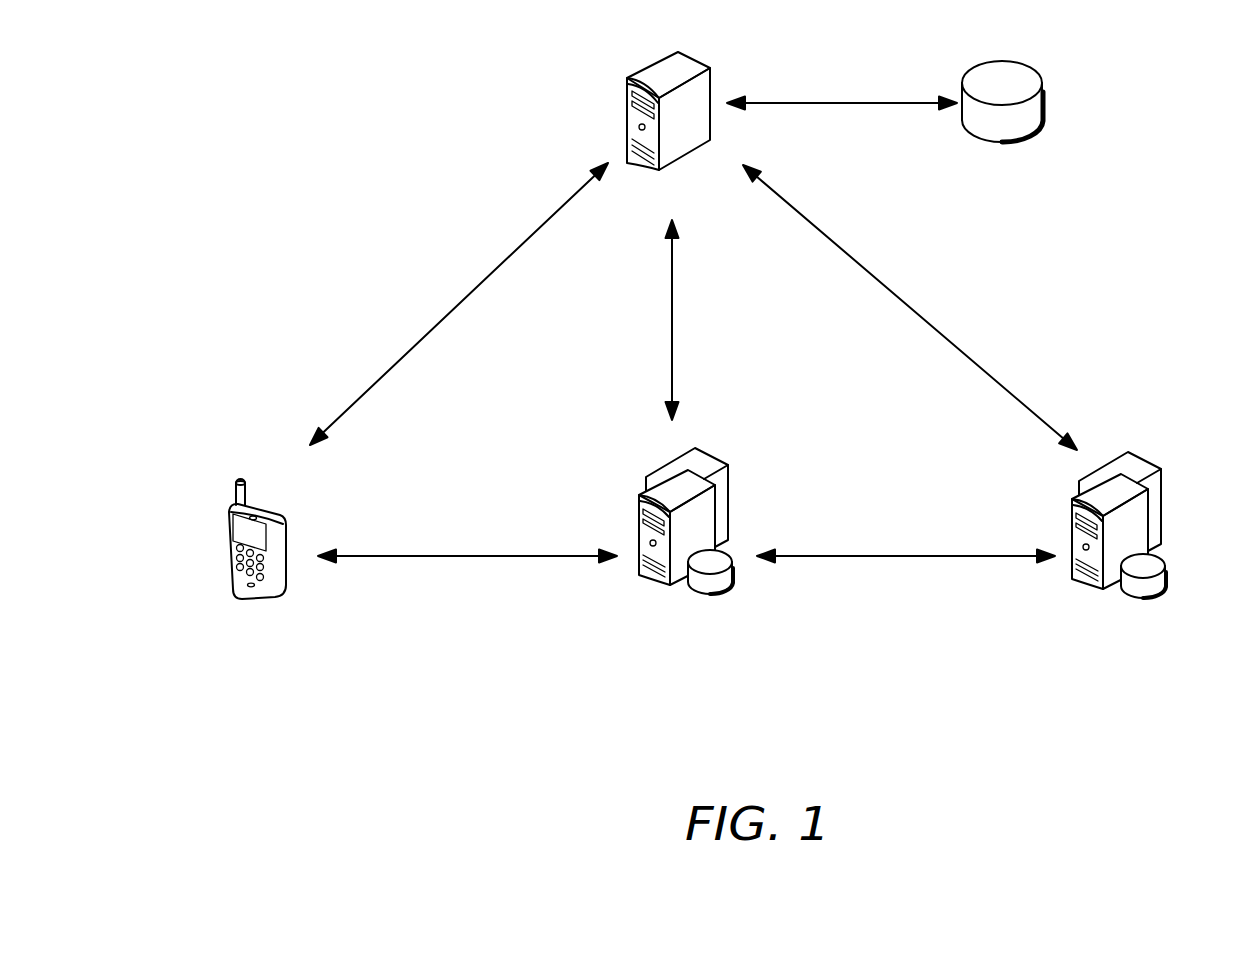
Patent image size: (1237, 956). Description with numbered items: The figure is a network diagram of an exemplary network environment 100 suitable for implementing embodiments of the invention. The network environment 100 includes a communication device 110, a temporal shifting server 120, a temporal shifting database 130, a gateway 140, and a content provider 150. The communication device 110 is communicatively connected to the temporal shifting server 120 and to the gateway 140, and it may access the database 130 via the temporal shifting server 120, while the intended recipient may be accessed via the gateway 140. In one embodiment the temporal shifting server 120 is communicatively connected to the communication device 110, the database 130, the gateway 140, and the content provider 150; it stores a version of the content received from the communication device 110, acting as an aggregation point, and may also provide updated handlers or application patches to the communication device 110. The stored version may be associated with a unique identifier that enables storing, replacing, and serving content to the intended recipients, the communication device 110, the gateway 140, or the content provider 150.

The network environment 100 is at (246, 730).
The communication device 110 is at (230, 572).
The temporal shifting server 120 is at (628, 93).
The temporal shifting database 130 is at (1050, 106).
The gateway 140 is at (636, 517).
The content provider 150 is at (1162, 517).